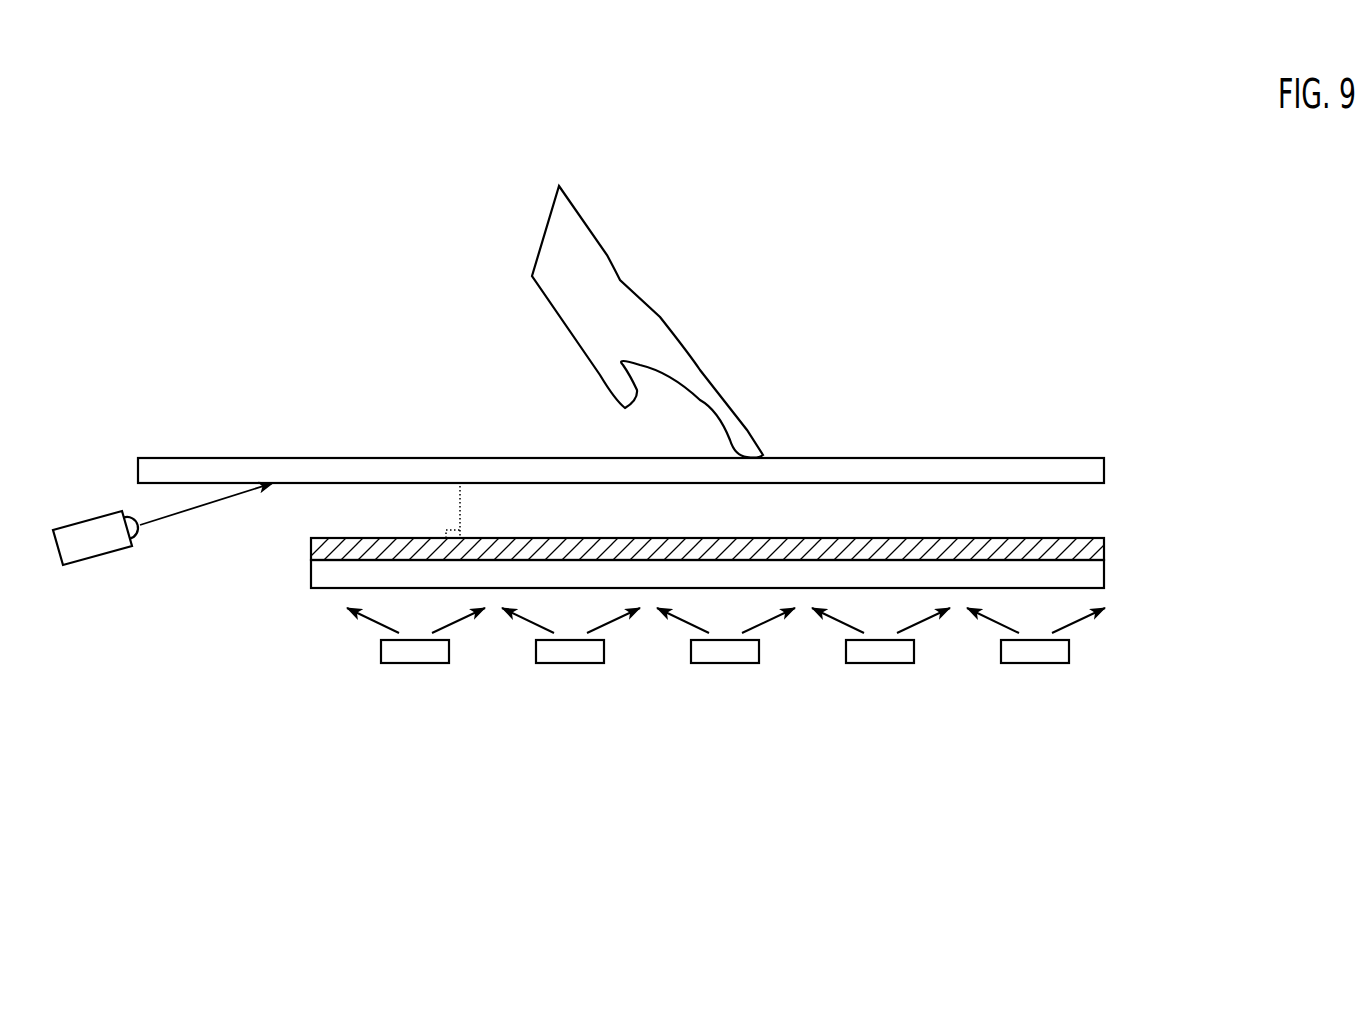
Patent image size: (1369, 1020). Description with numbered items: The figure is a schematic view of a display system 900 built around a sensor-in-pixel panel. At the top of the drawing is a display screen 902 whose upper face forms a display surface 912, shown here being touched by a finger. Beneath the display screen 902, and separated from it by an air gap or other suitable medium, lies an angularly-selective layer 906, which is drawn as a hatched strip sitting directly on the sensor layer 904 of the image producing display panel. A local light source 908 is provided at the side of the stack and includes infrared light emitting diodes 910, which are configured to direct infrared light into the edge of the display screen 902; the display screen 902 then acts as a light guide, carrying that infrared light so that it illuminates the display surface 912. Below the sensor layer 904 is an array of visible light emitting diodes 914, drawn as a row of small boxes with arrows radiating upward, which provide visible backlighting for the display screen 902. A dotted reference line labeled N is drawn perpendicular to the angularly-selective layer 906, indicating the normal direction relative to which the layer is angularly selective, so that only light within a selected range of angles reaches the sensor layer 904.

The display system 900 is at (1015, 202).
The display screen 902 is at (1104, 465).
The sensor layer 904 is at (1104, 578).
The angularly-selective layer 906 is at (1104, 557).
The local light source 908 is at (180, 717).
The infrared light emitting diodes 910 is at (107, 555).
The display surface 912 is at (960, 457).
The visible light emitting diodes 914 is at (1035, 665).
The surface normal N is at (465, 495).